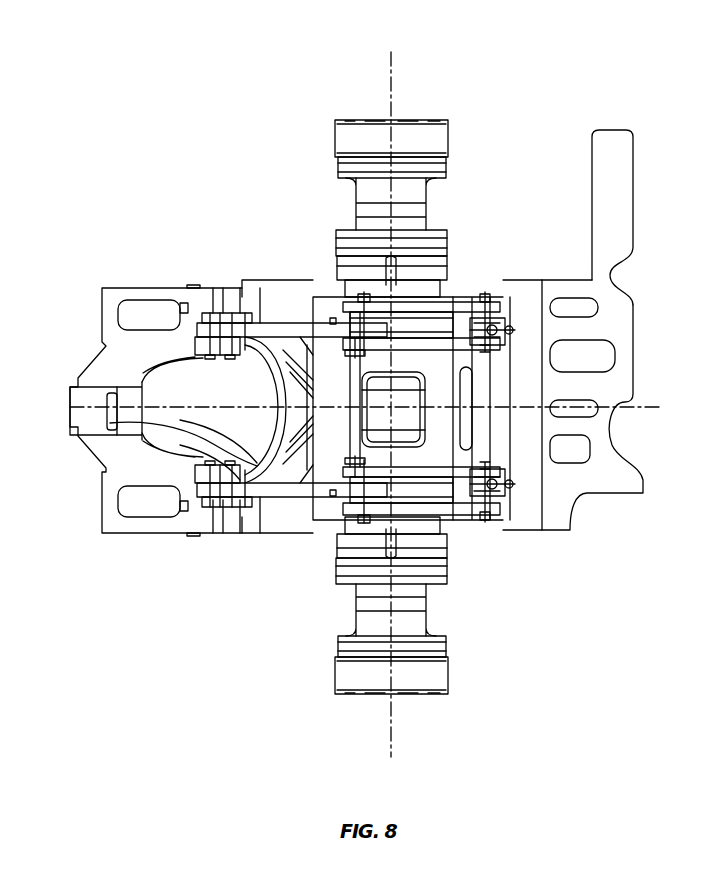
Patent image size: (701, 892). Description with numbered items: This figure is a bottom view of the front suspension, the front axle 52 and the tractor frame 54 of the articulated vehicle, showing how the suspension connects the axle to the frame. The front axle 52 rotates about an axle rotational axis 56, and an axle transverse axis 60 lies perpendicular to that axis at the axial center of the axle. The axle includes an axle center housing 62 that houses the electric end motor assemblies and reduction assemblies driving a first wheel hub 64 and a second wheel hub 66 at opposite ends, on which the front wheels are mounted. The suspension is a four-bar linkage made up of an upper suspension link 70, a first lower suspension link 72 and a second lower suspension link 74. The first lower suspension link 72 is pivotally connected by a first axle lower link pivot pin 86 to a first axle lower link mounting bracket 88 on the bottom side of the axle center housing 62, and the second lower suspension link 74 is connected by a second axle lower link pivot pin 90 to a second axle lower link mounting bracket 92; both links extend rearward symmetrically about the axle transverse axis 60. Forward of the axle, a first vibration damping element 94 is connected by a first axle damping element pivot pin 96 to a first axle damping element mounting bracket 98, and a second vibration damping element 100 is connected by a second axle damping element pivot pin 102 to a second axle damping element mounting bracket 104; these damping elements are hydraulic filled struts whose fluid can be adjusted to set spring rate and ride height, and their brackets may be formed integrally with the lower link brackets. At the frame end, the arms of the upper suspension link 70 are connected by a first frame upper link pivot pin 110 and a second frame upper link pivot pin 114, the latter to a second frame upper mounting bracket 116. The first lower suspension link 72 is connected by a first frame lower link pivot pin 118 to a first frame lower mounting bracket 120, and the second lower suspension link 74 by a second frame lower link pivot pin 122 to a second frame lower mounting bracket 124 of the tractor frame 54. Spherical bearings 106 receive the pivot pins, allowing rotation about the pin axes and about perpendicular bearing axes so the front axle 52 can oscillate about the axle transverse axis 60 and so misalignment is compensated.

The front axle 52 is at (443, 247).
The tractor frame 54 is at (609, 168).
The axle rotational axis 56 is at (391, 66).
The axle transverse axis 60 is at (650, 407).
The axle center housing 62 is at (438, 442).
The first wheel hub 64 is at (448, 137).
The second wheel hub 66 is at (448, 682).
The upper suspension link 70 is at (270, 328).
The first lower suspension link 72 is at (268, 322).
The second lower suspension link 74 is at (262, 513).
The first axle lower link pivot pin 86 is at (367, 292).
The first axle lower link mounting bracket 88 is at (355, 312).
The second axle lower link pivot pin 90 is at (367, 503).
The second axle lower link mounting bracket 92 is at (357, 503).
The first vibration damping element 94 is at (505, 330).
The first axle damping element pivot pin 96 is at (483, 298).
The first axle damping element mounting bracket 98 is at (506, 302).
The second vibration damping element 100 is at (490, 487).
The second axle damping element pivot pin 102 is at (490, 457).
The second axle damping element mounting bracket 104 is at (490, 507).
The spherical bearings 106 is at (233, 297).
The first frame upper link pivot pin 110 is at (72, 384).
The second frame upper link pivot pin 114 is at (100, 453).
The second frame upper mounting bracket 116 is at (112, 423).
The first frame lower link pivot pin 118 is at (200, 358).
The first frame lower mounting bracket 120 is at (197, 340).
The second frame lower link pivot pin 122 is at (197, 473).
The second frame lower mounting bracket 124 is at (193, 472).